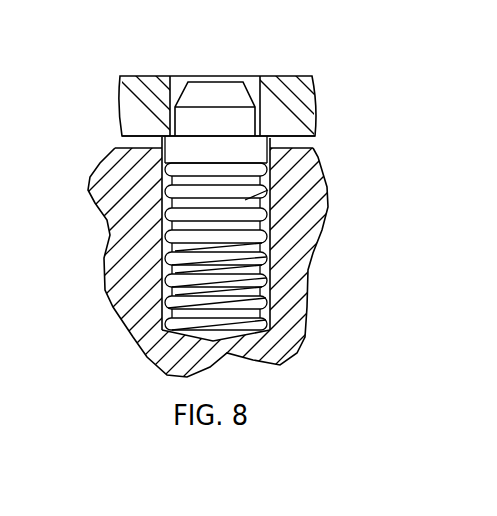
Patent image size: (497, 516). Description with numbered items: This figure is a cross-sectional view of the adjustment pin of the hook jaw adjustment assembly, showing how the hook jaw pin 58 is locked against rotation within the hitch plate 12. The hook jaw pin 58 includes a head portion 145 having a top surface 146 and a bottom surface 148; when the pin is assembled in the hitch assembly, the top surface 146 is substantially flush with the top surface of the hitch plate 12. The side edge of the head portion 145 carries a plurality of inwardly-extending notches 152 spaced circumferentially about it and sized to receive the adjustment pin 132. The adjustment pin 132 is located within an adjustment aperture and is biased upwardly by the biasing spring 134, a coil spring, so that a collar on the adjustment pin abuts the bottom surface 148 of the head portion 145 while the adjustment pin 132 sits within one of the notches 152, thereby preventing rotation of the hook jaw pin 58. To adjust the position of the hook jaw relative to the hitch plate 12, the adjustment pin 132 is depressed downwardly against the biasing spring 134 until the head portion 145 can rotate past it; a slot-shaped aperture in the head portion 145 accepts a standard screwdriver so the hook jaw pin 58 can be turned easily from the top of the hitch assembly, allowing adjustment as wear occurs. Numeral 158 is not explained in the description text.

The hitch plate 12 is at (112, 168).
The hook jaw pin 58 is at (280, 75).
The adjustment pin 132 is at (250, 198).
The biasing spring 134 is at (272, 273).
The head portion 145 is at (309, 110).
The top surface 146 is at (298, 75).
The bottom surface 148 is at (287, 158).
The notches 152 is at (257, 76).
The thread helix 158 is at (273, 220).